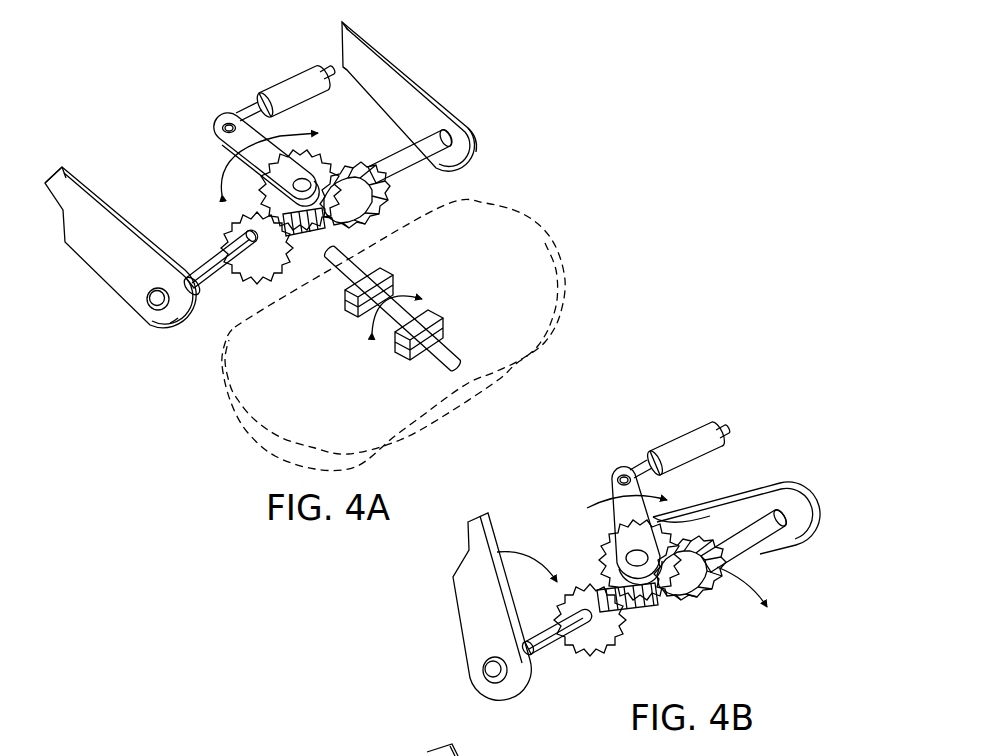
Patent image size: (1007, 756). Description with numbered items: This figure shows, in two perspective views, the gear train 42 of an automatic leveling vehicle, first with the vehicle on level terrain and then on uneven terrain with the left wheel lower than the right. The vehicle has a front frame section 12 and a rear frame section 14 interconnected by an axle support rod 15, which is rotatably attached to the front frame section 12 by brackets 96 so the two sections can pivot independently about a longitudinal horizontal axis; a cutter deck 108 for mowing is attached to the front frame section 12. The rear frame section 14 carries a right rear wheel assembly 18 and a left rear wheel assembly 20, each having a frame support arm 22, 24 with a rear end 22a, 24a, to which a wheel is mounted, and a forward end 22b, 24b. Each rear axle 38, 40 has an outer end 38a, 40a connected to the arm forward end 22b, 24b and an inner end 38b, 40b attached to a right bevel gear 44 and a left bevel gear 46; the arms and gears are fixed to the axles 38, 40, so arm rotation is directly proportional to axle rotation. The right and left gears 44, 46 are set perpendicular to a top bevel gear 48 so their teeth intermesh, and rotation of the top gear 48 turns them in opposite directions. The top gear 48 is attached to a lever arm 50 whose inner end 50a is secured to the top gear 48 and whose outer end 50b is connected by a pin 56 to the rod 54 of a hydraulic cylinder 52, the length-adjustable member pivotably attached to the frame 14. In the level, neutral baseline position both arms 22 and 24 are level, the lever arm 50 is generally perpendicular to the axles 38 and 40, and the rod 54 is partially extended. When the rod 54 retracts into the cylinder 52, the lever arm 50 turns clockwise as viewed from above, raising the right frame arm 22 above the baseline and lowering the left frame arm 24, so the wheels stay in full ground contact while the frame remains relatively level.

In FIG. 4A, the front frame section 12 is at (432, 334).
In FIG. 4A, the rear frame section 14 is at (478, 96).
In FIG. 4B, the rear frame section 14 is at (747, 400).
In FIG. 4A, the axle support rod 15 is at (389, 324).
In FIG. 4A, the right rear wheel assembly 18 is at (203, 262).
In FIG. 4B, the right rear wheel assembly 18 is at (553, 630).
In FIG. 4A, the left rear wheel assembly 20 is at (441, 126).
In FIG. 4B, the left rear wheel assembly 20 is at (761, 550).
In FIG. 4A, the frame support arm 22 is at (100, 277).
In FIG. 4B, the frame support arm 22 is at (468, 610).
In FIG. 4A, the rear end 22a is at (62, 169).
In FIG. 4A, the forward end 22b is at (170, 312).
In FIG. 4A, the frame support arm 24 is at (418, 80).
In FIG. 4B, the frame support arm 24 is at (760, 486).
In FIG. 4A, the rear end 24a is at (348, 30).
In FIG. 4A, the forward end 24b is at (478, 130).
In FIG. 4A, the rear axle 38 is at (208, 290).
In FIG. 4B, the rear axle 38 is at (547, 652).
In FIG. 4A, the rear axle outer end 38a is at (153, 306).
In FIG. 4A, the rear axle inner end 38b is at (242, 250).
In FIG. 4A, the rear axle 40 is at (420, 180).
In FIG. 4B, the rear axle 40 is at (752, 545).
In FIG. 4A, the rear axle outer end 40a is at (453, 140).
In FIG. 4A, the rear axle inner end 40b is at (420, 143).
In FIG. 4A, the gear train 42 is at (311, 237).
In FIG. 4B, the gear train 42 is at (643, 608).
In FIG. 4A, the right bevel gear 44 is at (247, 282).
In FIG. 4B, the right bevel gear 44 is at (620, 634).
In FIG. 4A, the left bevel gear 46 is at (386, 200).
In FIG. 4B, the left bevel gear 46 is at (708, 604).
In FIG. 4A, the top bevel gear 48 is at (262, 194).
In FIG. 4B, the top bevel gear 48 is at (607, 540).
In FIG. 4A, the lever arm 50 is at (284, 176).
In FIG. 4B, the lever arm 50 is at (655, 523).
In FIG. 4A, the inner end 50a is at (322, 178).
In FIG. 4B, the inner end 50a is at (641, 566).
In FIG. 4A, the outer end 50b is at (222, 120).
In FIG. 4B, the outer end 50b is at (620, 473).
In FIG. 4A, the hydraulic cylinder 52 is at (283, 84).
In FIG. 4B, the hydraulic cylinder 52 is at (682, 440).
In FIG. 4A, the rod 54 is at (247, 113).
In FIG. 4B, the rod 54 is at (640, 470).
In FIG. 4A, the pin 56 is at (221, 127).
In FIG. 4B, the pin 56 is at (616, 480).
In FIG. 4A, the brackets 96 is at (433, 311).
In FIG. 4A, the cutter deck 108 is at (311, 391).